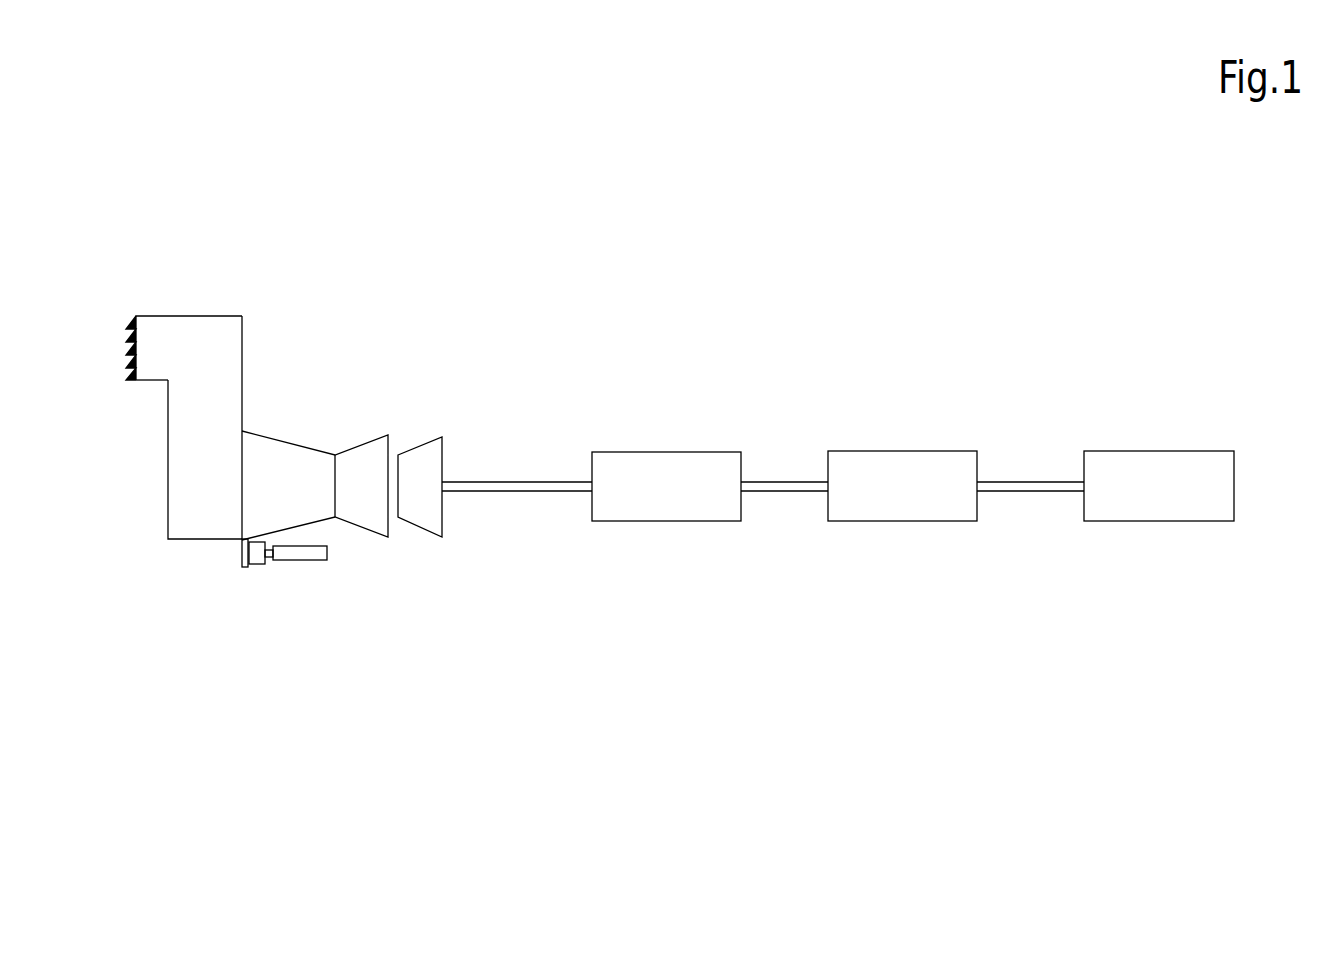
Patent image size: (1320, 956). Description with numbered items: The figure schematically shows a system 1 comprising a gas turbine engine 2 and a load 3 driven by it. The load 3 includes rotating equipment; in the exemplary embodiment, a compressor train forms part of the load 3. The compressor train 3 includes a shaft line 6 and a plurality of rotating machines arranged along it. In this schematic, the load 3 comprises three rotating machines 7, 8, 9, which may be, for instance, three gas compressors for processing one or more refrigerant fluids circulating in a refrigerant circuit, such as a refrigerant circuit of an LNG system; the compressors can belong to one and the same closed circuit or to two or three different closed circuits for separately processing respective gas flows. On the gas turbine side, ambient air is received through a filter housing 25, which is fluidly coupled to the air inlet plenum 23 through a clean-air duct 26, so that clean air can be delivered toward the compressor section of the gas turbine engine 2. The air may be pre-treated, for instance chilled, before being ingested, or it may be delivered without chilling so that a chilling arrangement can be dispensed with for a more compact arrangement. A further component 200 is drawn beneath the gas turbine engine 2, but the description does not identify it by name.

The system 1 is at (806, 328).
The gas turbine engine 2 is at (442, 631).
The load 3 is at (508, 412).
The shaft line 6 is at (505, 485).
The rotating machine 7 is at (649, 440).
The rotating machine 8 is at (876, 443).
The rotating machine 9 is at (1136, 447).
The air inlet plenum 23 is at (193, 492).
The filter housing 25 is at (164, 330).
The clean-air duct 26 is at (222, 368).
The starter motor 200 is at (318, 553).